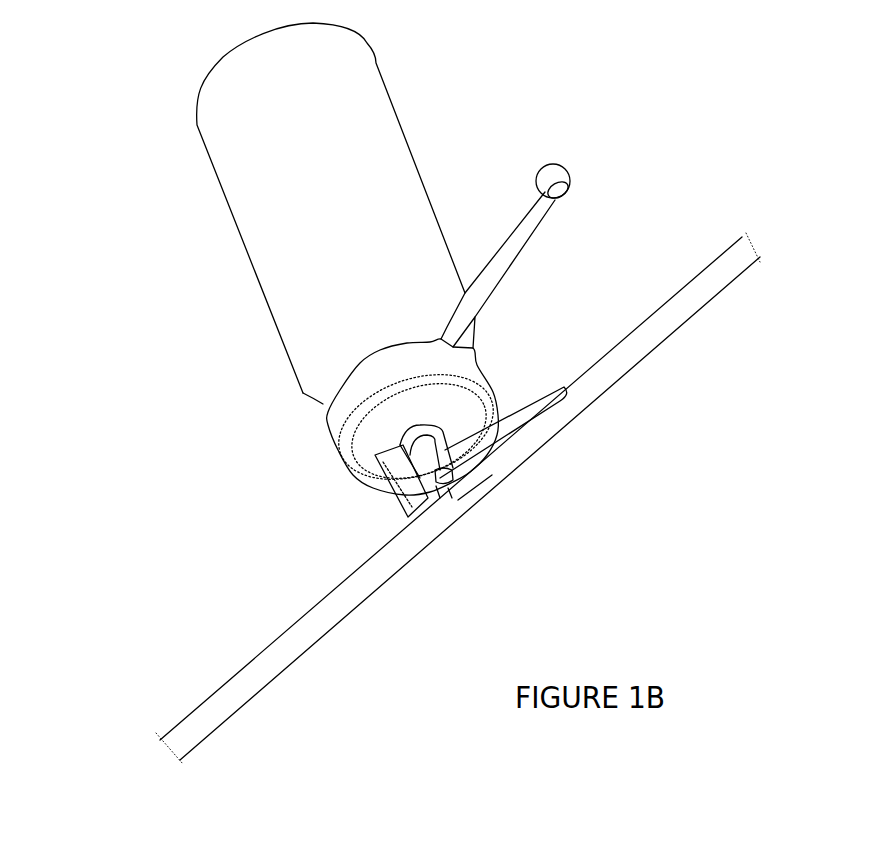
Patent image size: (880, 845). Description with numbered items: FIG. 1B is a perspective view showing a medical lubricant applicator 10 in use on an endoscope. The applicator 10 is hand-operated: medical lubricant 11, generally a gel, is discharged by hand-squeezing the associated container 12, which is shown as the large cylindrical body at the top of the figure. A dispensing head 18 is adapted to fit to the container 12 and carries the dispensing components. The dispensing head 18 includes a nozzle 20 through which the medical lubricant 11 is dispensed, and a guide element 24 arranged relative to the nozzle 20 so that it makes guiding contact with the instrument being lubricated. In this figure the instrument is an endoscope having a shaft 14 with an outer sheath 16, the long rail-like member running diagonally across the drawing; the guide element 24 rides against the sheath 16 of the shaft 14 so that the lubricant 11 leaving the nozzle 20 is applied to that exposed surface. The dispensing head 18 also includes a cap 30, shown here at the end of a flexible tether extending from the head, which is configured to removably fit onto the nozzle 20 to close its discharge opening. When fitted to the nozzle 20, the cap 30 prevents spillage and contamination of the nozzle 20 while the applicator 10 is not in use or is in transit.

The medical lubricant applicator 10 is at (527, 117).
The medical lubricant 11 is at (446, 487).
The container 12 is at (280, 247).
The shaft 14 is at (317, 593).
The outer sheath 16 is at (527, 459).
The dispensing head 18 is at (318, 450).
The nozzle 20 is at (440, 425).
The guide element 24 is at (397, 498).
The cap 30 is at (543, 167).